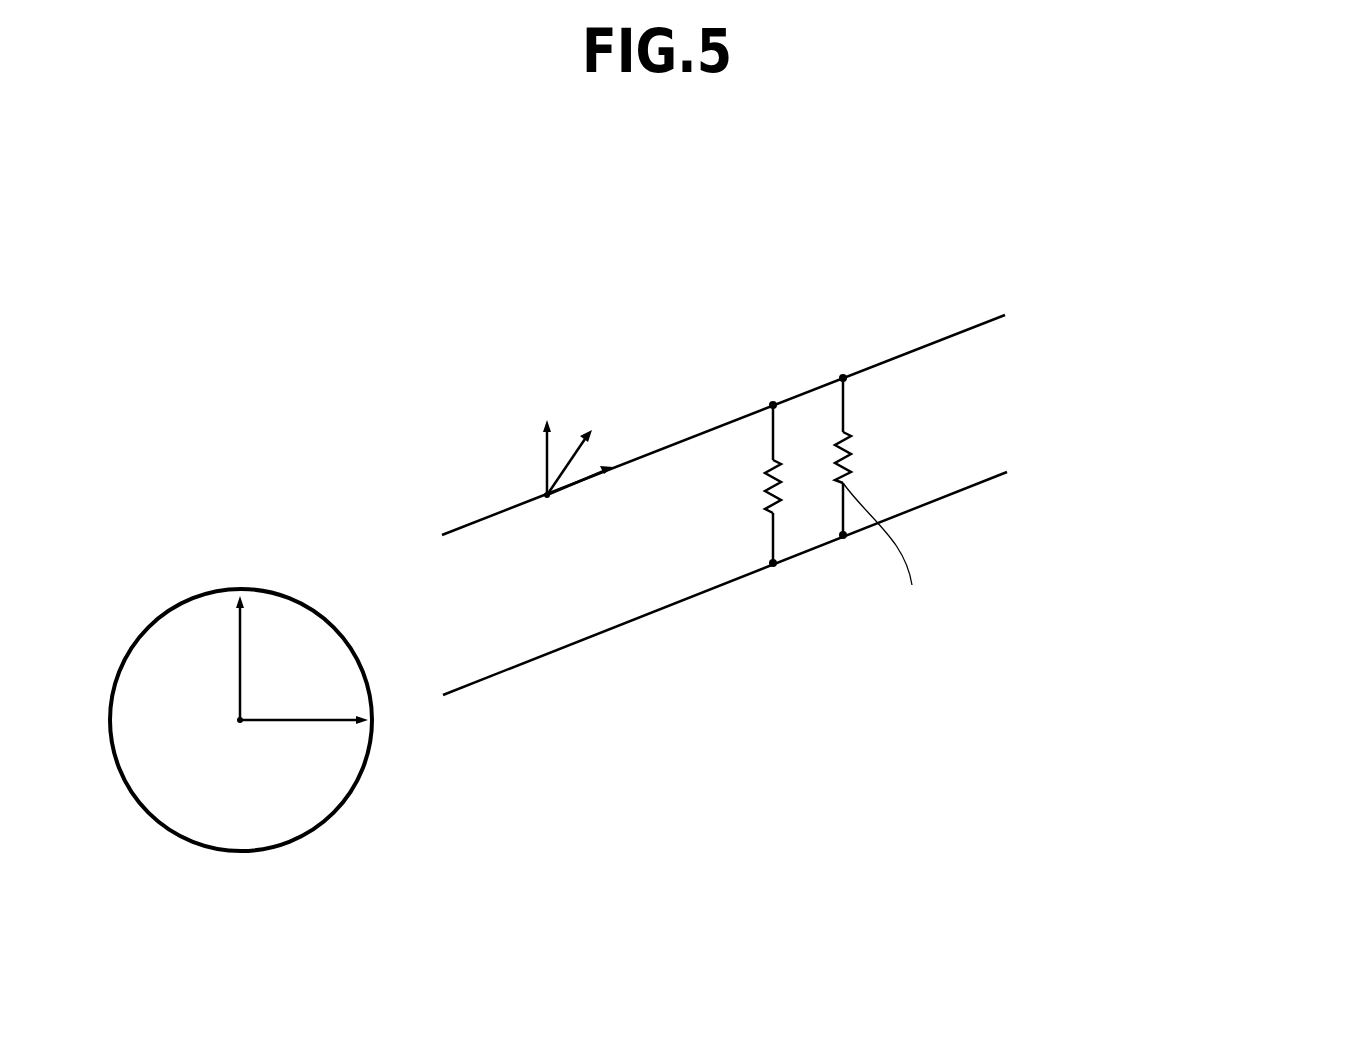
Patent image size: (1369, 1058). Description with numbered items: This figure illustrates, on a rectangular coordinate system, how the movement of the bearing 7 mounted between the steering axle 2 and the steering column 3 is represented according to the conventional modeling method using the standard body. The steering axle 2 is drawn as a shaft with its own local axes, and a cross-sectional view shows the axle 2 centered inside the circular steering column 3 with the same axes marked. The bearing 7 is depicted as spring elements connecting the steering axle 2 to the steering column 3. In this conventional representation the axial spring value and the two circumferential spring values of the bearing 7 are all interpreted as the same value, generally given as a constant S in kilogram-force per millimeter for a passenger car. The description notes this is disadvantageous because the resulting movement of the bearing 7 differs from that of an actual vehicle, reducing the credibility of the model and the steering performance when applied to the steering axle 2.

The steering axle 2 is at (503, 507).
The steering column 3 is at (588, 638).
The bearing 7 is at (768, 513).